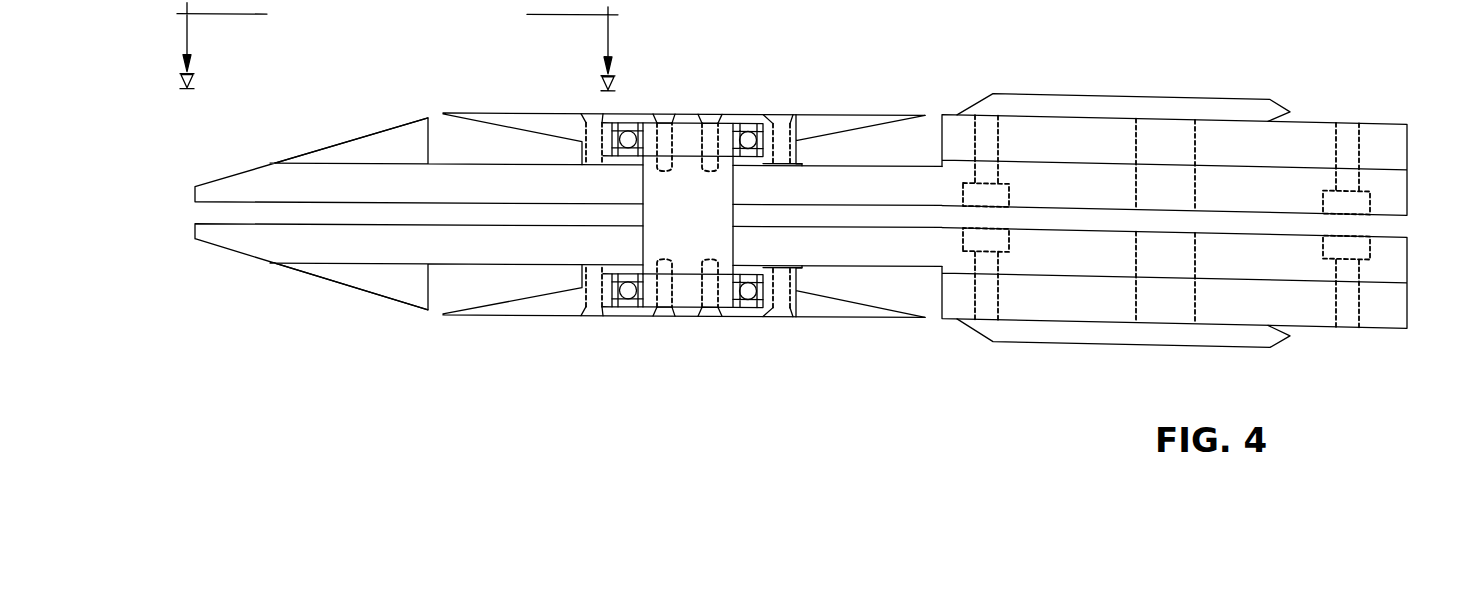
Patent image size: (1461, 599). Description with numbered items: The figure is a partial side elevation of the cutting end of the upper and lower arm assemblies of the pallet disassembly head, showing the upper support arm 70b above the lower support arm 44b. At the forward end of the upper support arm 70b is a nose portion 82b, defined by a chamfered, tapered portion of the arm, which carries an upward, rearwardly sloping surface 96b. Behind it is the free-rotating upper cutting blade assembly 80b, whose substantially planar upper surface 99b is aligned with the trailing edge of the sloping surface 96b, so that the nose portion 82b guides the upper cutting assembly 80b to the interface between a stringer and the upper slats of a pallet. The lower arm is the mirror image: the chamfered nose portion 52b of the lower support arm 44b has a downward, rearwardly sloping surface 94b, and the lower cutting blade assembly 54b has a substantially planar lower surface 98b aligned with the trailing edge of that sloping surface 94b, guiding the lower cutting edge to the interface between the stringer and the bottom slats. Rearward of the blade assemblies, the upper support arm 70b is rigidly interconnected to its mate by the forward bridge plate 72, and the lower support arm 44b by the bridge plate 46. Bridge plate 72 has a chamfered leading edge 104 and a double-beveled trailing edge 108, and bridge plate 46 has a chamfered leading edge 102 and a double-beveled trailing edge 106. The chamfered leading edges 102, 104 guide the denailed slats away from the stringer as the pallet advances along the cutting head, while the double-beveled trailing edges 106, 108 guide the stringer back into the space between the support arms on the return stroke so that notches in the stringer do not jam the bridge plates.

The nose portion 82b is at (246, 166).
The upward, rearwardly sloping surface 96b is at (314, 150).
The planar upper surface 99b is at (537, 110).
The cutting blade assembly 80b is at (684, 106).
The chamfered leading edge 104 is at (972, 106).
The forward bridge plate 72 is at (1088, 86).
The double-beveled trailing edge 108 is at (1275, 89).
The support arm 70b is at (1366, 111).
The chamfered nose portion 52b is at (243, 256).
The downward, rearwardly sloping surface 94b is at (318, 282).
The planar lower surface 98b is at (541, 319).
The cutting blade assembly 54b is at (660, 315).
The chamfered leading edge 102 is at (980, 318).
The bridge plate 46 is at (1067, 334).
The double-beveled trailing edge 106 is at (1285, 331).
The support arm 44b is at (1370, 317).